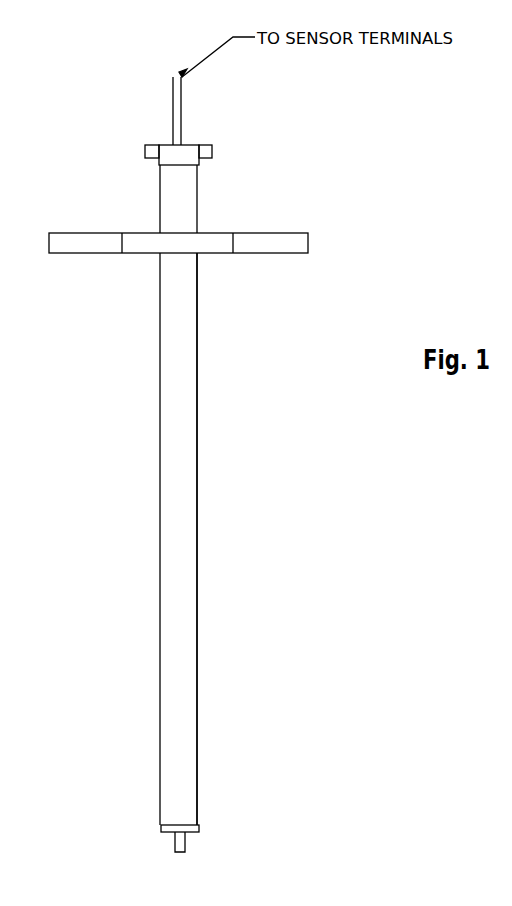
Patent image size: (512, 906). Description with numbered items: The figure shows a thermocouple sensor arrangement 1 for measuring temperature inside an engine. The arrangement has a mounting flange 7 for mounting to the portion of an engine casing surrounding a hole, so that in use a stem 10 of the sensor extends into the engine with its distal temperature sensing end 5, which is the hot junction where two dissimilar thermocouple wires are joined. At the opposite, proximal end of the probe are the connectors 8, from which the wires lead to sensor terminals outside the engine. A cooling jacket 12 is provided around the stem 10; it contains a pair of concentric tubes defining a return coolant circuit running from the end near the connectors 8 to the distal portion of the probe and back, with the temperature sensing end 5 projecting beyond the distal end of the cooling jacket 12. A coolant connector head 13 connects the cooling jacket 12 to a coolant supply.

The thermocouple sensor arrangement 1 is at (134, 474).
The temperature sensing end 5 is at (183, 848).
The mounting flange 7 is at (252, 256).
The connectors 8 is at (113, 175).
The stem 10 is at (242, 626).
The cooling jacket 12 is at (199, 415).
The coolant connector head 13 is at (202, 162).